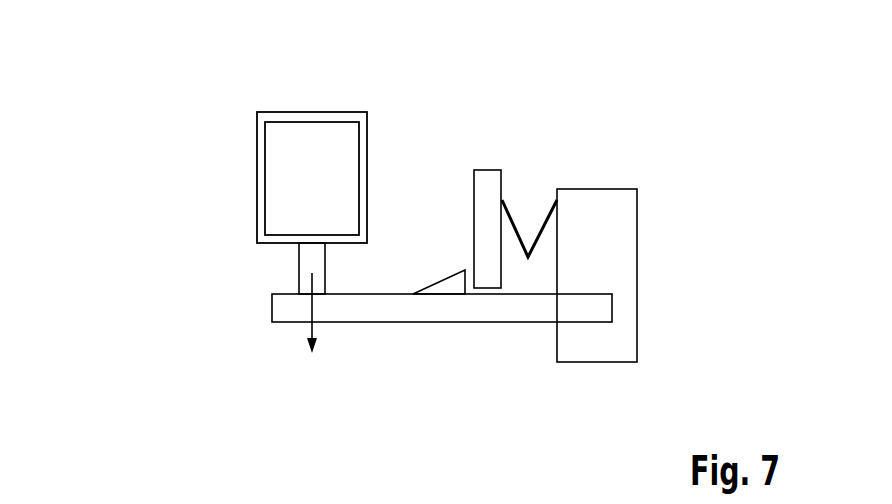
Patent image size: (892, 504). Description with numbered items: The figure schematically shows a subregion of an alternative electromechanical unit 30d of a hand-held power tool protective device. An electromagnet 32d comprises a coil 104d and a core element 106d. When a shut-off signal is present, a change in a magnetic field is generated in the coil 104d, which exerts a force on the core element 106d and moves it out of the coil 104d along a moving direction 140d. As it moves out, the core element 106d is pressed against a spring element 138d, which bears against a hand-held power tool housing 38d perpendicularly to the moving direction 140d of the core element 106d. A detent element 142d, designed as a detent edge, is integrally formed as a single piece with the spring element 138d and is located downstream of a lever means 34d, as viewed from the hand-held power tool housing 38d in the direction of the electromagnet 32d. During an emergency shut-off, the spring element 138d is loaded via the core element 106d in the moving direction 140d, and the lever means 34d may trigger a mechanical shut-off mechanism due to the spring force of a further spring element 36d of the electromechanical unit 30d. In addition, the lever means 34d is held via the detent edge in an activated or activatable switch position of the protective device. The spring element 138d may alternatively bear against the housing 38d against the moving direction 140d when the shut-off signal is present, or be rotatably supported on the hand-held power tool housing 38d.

The electromechanical unit 30d is at (656, 140).
The electromagnet 32d is at (212, 101).
The lever means 34d is at (492, 183).
The spring element 36d is at (513, 226).
The hand-held power tool housing 38d is at (620, 242).
The coil 104d is at (313, 137).
The core element 106d is at (312, 262).
The spring element 138d is at (360, 308).
The moving direction 140d is at (297, 312).
The detent element 142d is at (447, 283).